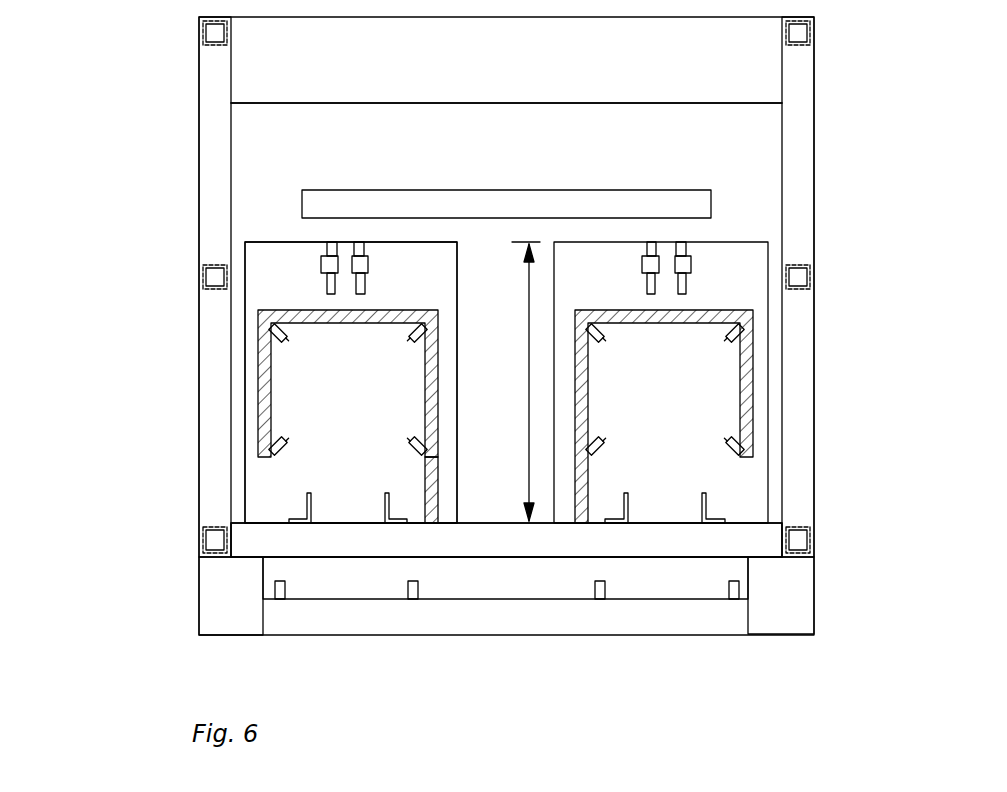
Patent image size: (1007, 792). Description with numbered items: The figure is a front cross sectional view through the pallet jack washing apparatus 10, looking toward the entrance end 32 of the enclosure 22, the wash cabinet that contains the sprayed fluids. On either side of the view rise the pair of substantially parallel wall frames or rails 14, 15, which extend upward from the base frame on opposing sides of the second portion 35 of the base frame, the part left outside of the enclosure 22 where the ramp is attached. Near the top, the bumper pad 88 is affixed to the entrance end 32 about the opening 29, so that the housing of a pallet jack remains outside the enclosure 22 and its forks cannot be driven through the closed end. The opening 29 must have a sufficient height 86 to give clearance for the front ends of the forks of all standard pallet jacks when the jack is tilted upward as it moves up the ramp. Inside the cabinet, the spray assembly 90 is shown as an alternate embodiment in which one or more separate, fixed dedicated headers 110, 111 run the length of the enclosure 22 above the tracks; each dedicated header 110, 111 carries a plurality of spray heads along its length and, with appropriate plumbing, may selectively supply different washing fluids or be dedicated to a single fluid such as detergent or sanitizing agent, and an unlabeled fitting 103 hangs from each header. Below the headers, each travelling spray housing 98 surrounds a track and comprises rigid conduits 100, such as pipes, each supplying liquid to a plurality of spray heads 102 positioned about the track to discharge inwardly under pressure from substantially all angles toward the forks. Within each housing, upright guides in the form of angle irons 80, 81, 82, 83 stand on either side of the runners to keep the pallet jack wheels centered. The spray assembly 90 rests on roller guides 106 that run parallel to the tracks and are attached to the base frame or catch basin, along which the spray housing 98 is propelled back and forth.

The pallet jack washing apparatus 10 is at (502, 690).
The wall frame 14 is at (814, 30).
The rail 15 is at (231, 30).
The enclosure 22 is at (578, 103).
The opening 29 is at (245, 252).
The entrance end 32 is at (730, 140).
The second portion 35 is at (742, 520).
The angle iron 80 is at (628, 494).
The angle iron 81 is at (387, 494).
The angle iron 82 is at (706, 510).
The angle iron 83 is at (305, 511).
The height 86 is at (518, 568).
The bumper pad 88 is at (410, 207).
The spray assembly 90 is at (118, 450).
The spray housing 98 is at (529, 348).
The rigid conduit 100 is at (258, 415).
The spray head 102 is at (410, 340).
The pin stem 103 is at (358, 293).
The roller guide 106 is at (285, 590).
The dedicated header 110 is at (323, 262).
The dedicated header 111 is at (372, 262).